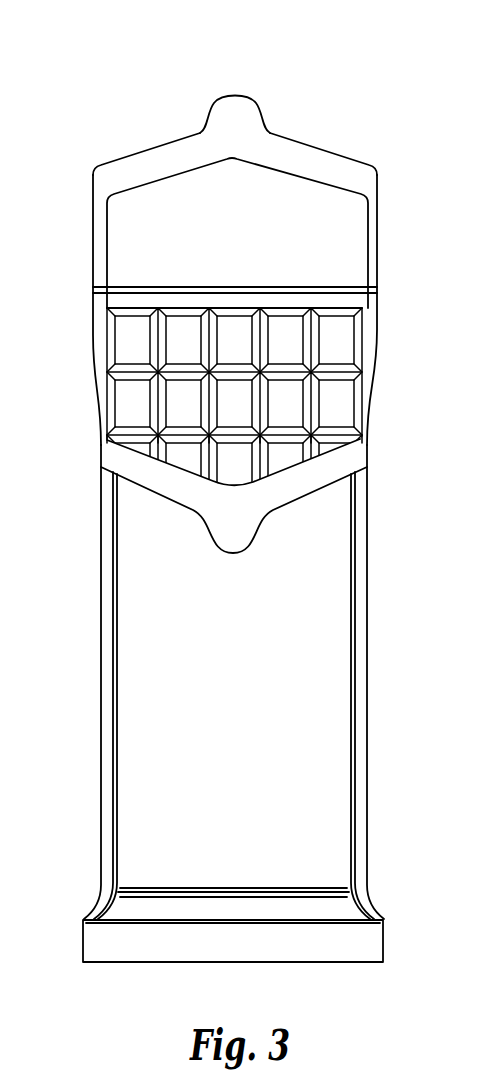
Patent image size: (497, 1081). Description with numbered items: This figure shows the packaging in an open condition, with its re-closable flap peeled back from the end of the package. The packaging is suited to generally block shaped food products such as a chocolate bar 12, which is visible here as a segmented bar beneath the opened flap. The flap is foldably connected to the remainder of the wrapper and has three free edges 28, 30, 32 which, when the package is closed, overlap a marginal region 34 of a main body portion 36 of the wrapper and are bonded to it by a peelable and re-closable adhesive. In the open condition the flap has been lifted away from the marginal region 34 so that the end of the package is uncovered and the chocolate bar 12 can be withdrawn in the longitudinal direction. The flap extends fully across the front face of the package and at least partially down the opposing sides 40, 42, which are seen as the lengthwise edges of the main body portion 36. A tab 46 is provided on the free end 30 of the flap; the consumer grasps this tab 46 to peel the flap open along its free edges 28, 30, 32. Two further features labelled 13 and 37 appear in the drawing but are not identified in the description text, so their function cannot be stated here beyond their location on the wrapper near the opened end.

The chocolate bar 12 is at (337, 408).
The transverse ribs 13 is at (293, 307).
The free edge 28 is at (378, 225).
The free end 30 is at (310, 142).
The free edge 32 is at (93, 258).
The marginal region 34 is at (297, 485).
The main body portion 36 is at (305, 688).
The inner top panel 37 is at (125, 177).
The opposing side 40 is at (358, 785).
The opposing side 42 is at (107, 683).
The tab 46 is at (237, 92).